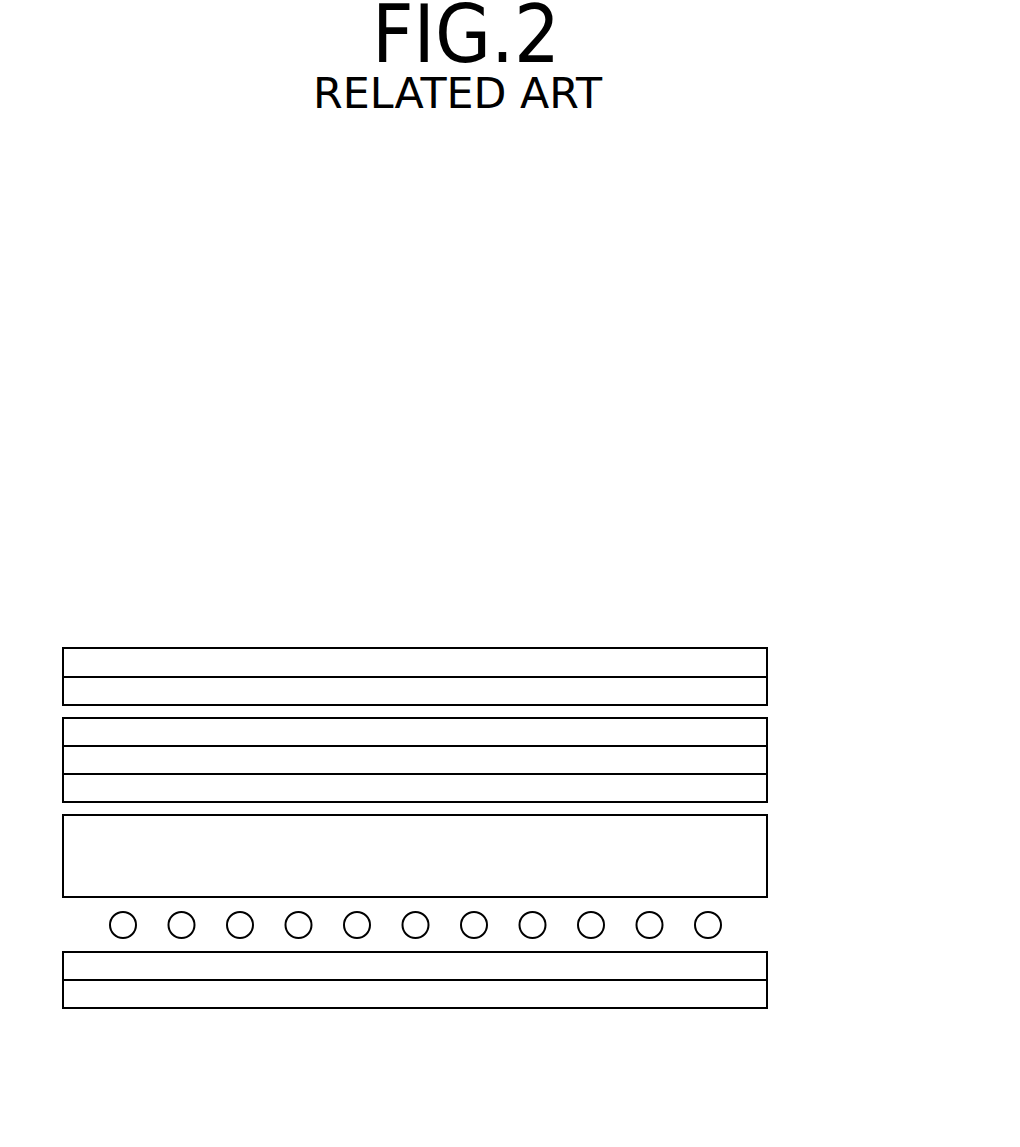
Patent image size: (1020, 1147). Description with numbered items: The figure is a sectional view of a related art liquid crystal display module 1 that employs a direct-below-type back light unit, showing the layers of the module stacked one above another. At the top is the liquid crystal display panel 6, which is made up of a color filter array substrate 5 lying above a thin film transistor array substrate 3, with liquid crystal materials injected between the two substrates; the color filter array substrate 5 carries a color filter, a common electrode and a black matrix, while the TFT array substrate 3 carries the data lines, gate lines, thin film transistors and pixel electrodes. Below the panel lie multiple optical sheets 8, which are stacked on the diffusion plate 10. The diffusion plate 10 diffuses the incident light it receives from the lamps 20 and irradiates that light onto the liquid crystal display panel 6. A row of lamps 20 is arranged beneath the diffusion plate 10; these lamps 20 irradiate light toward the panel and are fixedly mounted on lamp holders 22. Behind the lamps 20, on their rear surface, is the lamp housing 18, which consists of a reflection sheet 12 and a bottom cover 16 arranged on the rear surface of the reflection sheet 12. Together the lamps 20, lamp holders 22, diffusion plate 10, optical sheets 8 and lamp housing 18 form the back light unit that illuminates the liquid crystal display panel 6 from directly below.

The liquid crystal display module 1 is at (830, 611).
The thin film transistor array substrate 3 is at (767, 692).
The color filter array substrate 5 is at (767, 660).
The liquid crystal display panel 6 is at (471, 678).
The optical sheets 8 is at (760, 733).
The diffusion plate 10 is at (767, 856).
The reflection sheet 12 is at (767, 965).
The bottom cover 16 is at (767, 997).
The lamp housing 18 is at (494, 980).
The lamps 20 is at (662, 935).
The lamp holders 22 is at (481, 985).